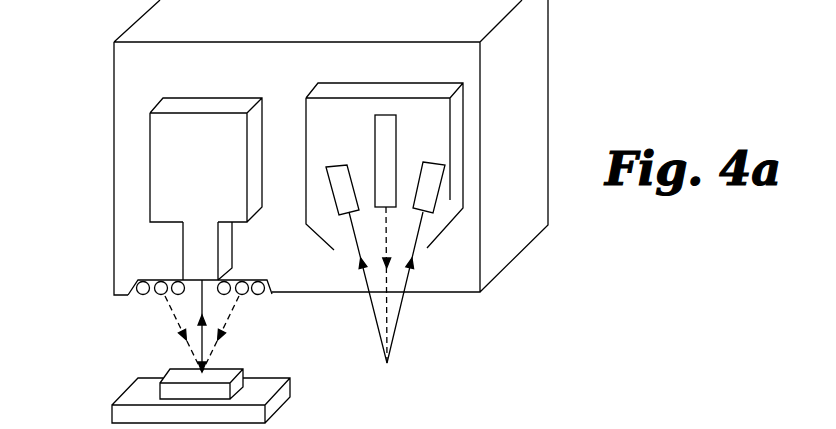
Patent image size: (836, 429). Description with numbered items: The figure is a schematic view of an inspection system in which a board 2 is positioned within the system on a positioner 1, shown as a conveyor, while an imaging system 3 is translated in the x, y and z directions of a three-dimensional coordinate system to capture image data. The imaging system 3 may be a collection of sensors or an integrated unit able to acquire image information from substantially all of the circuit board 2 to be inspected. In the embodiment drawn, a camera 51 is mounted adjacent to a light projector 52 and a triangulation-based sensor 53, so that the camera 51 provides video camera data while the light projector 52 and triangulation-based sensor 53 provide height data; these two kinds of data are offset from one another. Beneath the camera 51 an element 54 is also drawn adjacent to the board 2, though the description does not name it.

The positioner 1 is at (112, 412).
The board 2 is at (158, 388).
The imaging system 3 is at (517, 58).
The camera 51 is at (150, 158).
The light projector 52 is at (396, 145).
The triangulation-based sensor 53 is at (437, 198).
The illumination / lens plate 54 is at (138, 280).